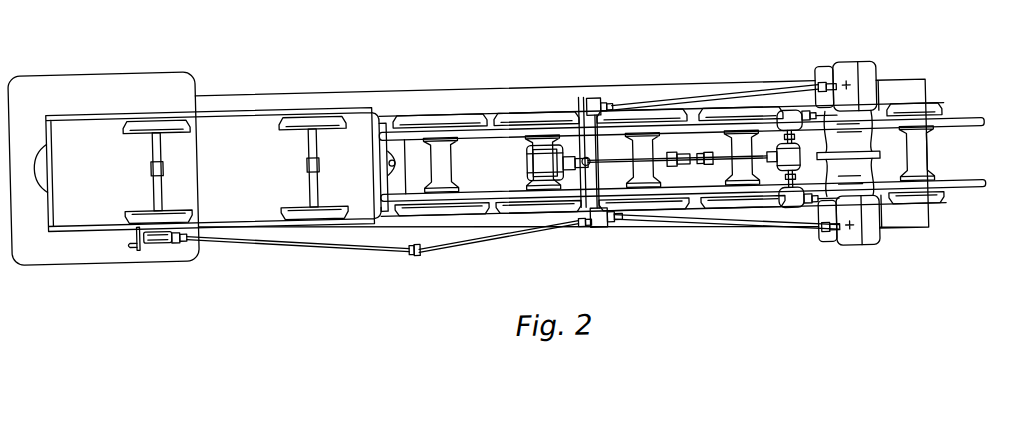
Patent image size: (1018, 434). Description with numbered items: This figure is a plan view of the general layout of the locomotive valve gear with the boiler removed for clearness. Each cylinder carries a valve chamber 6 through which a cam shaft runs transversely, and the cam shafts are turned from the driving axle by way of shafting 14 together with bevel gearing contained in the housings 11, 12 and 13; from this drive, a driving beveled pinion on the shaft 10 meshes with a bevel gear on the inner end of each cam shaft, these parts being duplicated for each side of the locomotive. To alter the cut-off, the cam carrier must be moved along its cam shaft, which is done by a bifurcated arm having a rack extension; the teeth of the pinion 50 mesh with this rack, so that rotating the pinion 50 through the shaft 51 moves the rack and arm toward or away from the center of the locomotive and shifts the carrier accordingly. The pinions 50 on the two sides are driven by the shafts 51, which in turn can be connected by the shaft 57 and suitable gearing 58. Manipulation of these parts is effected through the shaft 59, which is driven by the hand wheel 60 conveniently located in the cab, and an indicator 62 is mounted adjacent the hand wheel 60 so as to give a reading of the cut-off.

The valve chamber 6 is at (848, 76).
The shaft 10 is at (817, 115).
The housing 11 is at (788, 122).
The housing 12 is at (782, 154).
The housing 13 is at (527, 161).
The shafting 14 is at (640, 164).
The pinion 50 is at (851, 91).
The shaft 51 is at (704, 100).
The shaft 57 is at (597, 172).
The gearing 58 is at (595, 99).
The shaft 59 is at (455, 238).
The hand wheel 60 is at (137, 232).
The indicator 62 is at (152, 233).